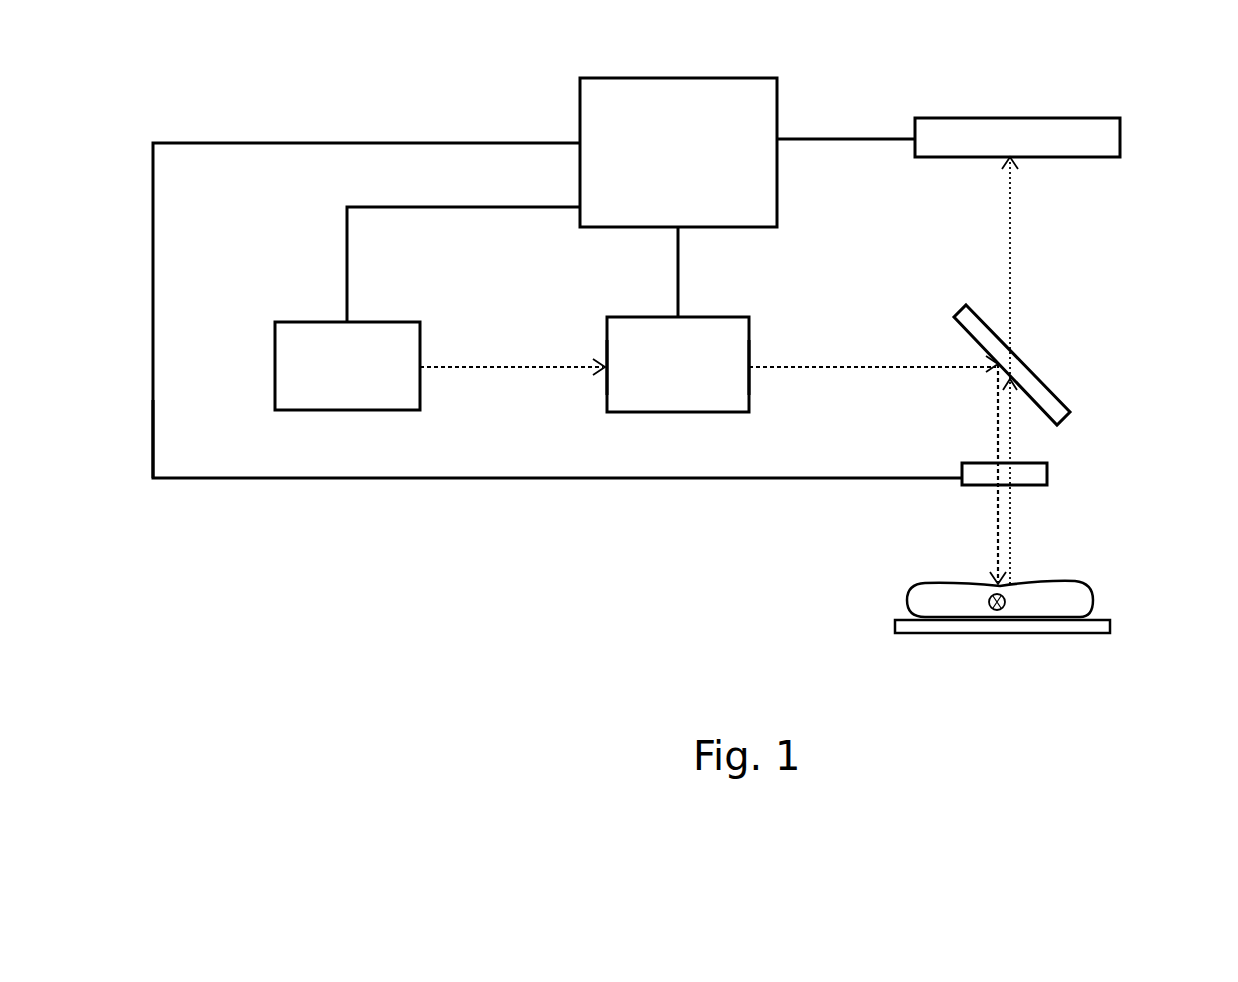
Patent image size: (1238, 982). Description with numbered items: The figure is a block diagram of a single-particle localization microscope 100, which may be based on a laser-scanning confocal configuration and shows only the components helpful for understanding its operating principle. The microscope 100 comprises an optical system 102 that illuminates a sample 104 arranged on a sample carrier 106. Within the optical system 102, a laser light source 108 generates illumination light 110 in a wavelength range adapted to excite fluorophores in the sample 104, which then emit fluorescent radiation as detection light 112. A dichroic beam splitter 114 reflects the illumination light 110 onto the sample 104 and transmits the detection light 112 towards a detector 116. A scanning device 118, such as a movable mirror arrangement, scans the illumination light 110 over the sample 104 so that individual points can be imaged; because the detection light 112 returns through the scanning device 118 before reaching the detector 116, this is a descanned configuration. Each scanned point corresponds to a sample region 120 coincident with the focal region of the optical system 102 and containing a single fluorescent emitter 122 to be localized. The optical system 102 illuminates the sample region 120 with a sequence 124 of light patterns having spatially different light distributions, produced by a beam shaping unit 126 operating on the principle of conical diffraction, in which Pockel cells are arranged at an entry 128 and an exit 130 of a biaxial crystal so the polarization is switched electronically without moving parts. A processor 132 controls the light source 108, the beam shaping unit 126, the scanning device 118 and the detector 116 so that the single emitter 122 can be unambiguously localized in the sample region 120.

The single-particle localization microscope 100 is at (313, 68).
The optical system 102 is at (468, 448).
The sample 104 is at (1070, 606).
The sample carrier 106 is at (1110, 626).
The laser light source 108 is at (295, 322).
The illumination light 110 is at (524, 364).
The detection light 112 is at (1010, 528).
The dichroic beam splitter 114 is at (1053, 399).
The detector 116 is at (1120, 130).
The scanning device 118 is at (970, 487).
The sample region 120 is at (990, 610).
The single fluorescent emitter 122 is at (1001, 612).
The sequence of light patterns 124 is at (815, 362).
The beam shaping unit 126 is at (707, 412).
The entry 128 is at (602, 375).
The exit 130 is at (749, 375).
The processor 132 is at (777, 121).